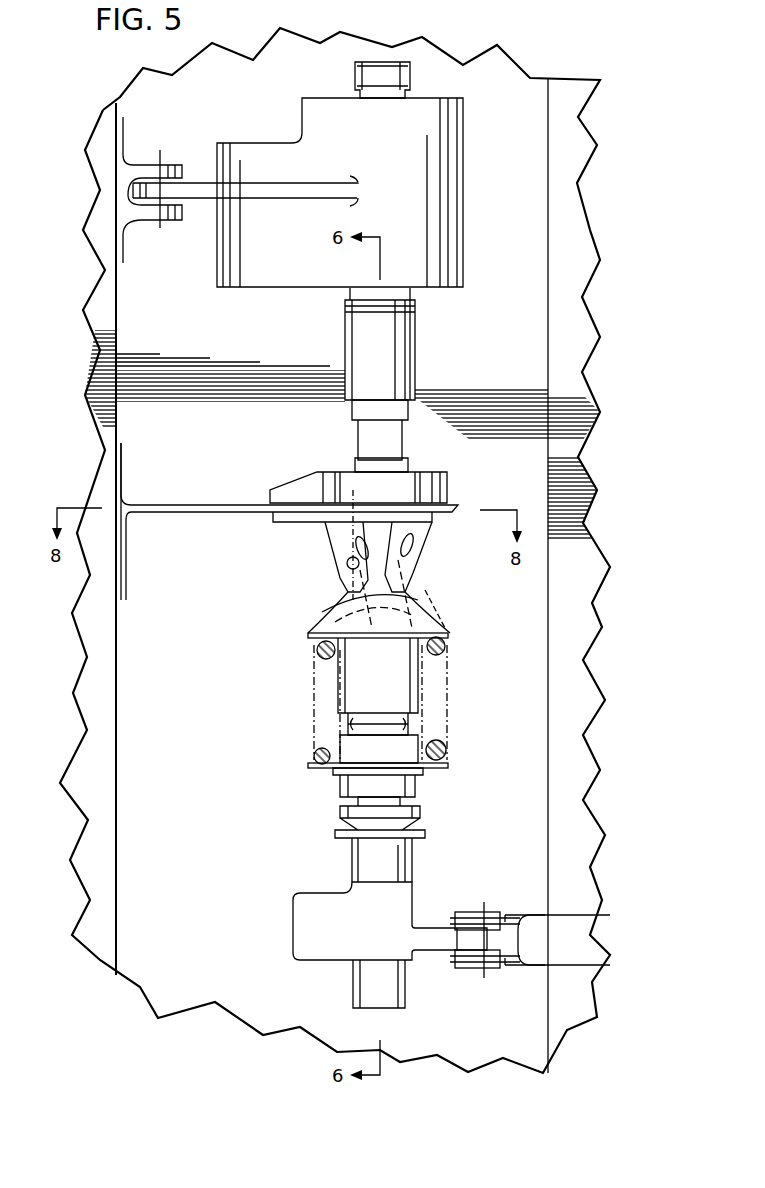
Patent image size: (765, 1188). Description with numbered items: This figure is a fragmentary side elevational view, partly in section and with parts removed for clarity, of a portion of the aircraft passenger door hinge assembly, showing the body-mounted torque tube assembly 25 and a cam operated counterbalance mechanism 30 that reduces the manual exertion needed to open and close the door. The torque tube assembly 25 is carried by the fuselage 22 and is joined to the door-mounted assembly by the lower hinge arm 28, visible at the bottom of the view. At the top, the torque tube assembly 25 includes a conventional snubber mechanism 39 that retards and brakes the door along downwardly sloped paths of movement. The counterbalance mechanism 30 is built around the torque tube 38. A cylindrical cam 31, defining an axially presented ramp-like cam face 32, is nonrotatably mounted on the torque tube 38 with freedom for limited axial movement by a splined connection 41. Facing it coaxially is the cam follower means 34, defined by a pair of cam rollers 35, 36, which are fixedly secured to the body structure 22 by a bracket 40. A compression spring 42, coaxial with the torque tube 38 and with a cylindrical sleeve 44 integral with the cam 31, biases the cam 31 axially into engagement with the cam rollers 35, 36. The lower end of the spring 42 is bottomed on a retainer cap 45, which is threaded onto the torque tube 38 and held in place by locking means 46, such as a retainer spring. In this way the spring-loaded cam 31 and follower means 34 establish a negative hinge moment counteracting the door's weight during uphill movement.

The fuselage 22 is at (104, 455).
The second torque tube assembly 25 is at (262, 590).
The lower hinge arm 28 is at (585, 936).
The counterbalance mechanism 30 is at (490, 612).
The cylindrical cam 31 is at (330, 613).
The cam face 32 is at (333, 600).
The cam follower means 34 is at (450, 528).
The cam roller 35 is at (335, 550).
The cam roller 36 is at (418, 568).
The torque tube 38 is at (385, 868).
The snubber mechanism 39 is at (443, 182).
The bracket 40 is at (174, 505).
The splined connection 41 is at (430, 600).
The compression spring 42 is at (437, 722).
The cylindrical sleeve 44 is at (355, 673).
The retainer cap 45 is at (433, 770).
The locking means 46 is at (338, 770).